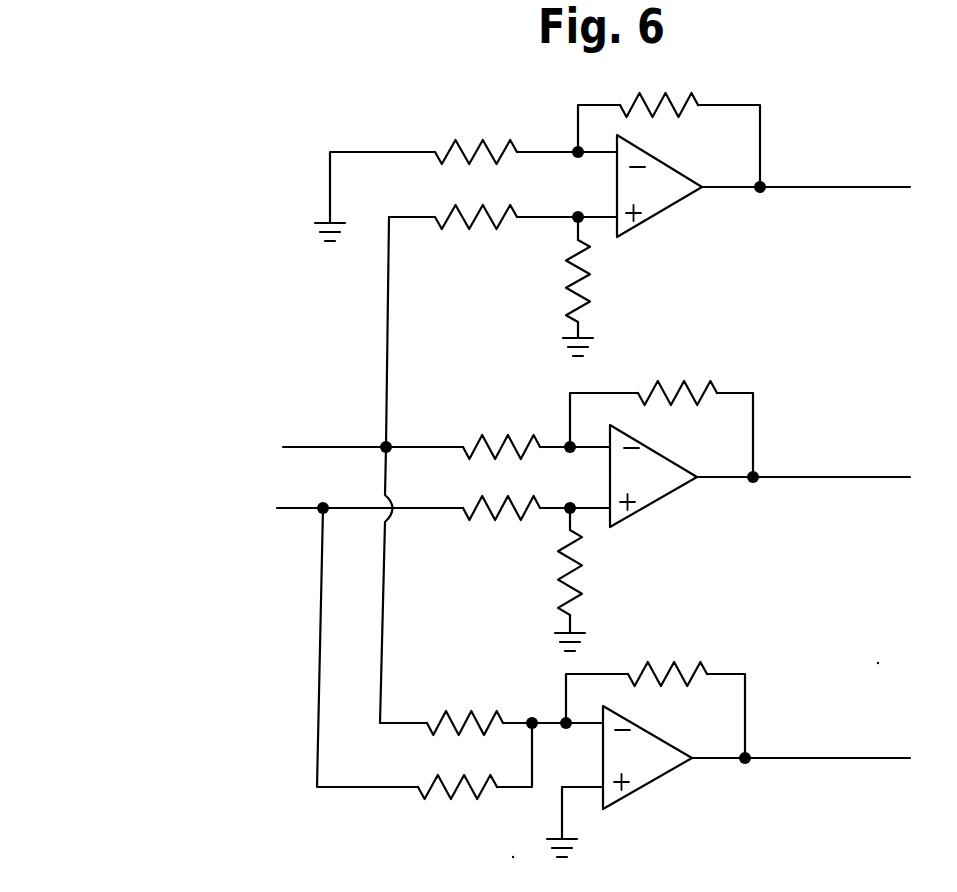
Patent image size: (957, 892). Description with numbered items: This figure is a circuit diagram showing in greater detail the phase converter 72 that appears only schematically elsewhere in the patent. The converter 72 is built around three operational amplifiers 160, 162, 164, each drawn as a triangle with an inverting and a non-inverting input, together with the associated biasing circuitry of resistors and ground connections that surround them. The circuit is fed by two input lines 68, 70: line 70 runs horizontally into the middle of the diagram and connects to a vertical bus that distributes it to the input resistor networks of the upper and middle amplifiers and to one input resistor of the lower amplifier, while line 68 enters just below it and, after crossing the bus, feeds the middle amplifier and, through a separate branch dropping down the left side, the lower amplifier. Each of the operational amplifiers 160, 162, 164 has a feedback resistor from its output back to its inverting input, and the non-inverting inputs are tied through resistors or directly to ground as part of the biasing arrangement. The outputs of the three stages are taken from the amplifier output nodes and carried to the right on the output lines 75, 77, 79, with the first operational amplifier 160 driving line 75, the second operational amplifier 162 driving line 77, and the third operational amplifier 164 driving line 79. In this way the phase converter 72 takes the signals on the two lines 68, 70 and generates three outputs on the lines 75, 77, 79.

The phase converter 72 is at (238, 139).
The line 70 is at (303, 445).
The line 68 is at (295, 510).
The operational amplifier 160 is at (658, 212).
The operational amplifier 162 is at (650, 503).
The operational amplifier 164 is at (648, 778).
The line 75 is at (843, 188).
The line 77 is at (838, 480).
The line 79 is at (833, 760).